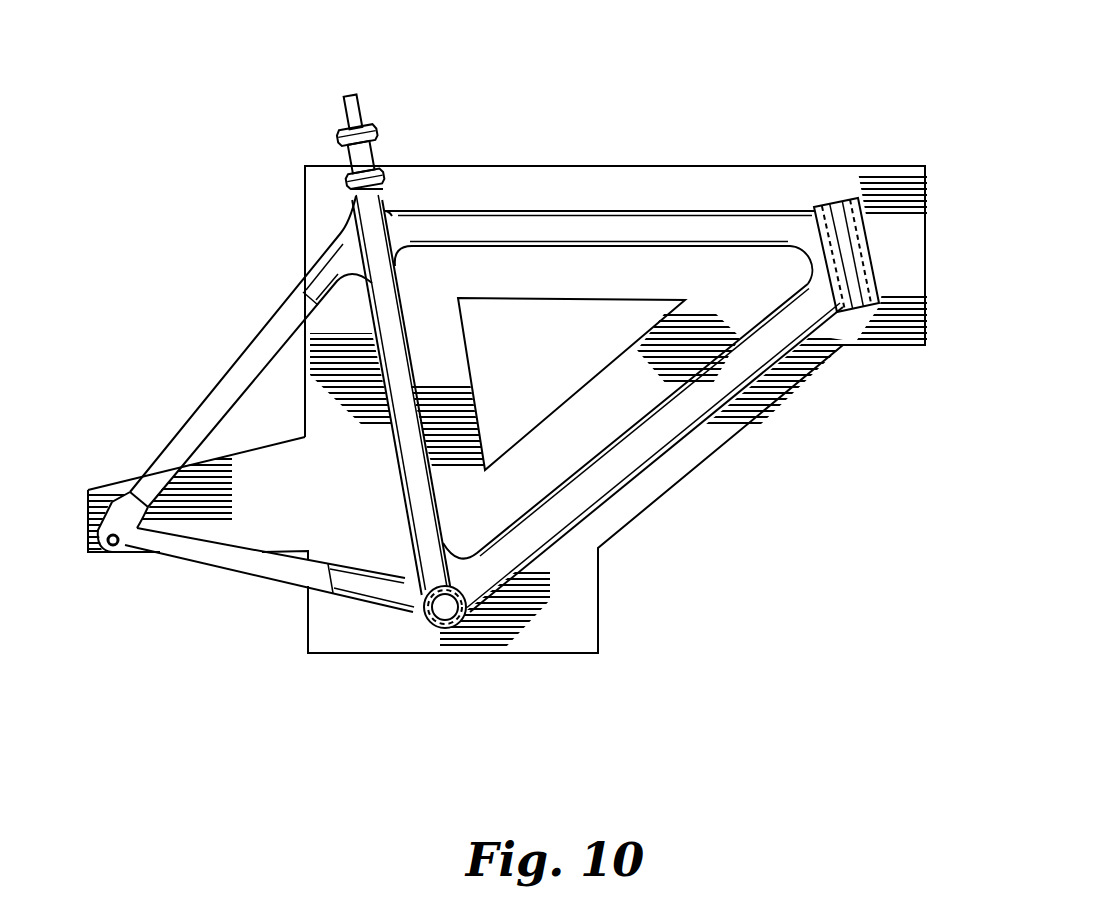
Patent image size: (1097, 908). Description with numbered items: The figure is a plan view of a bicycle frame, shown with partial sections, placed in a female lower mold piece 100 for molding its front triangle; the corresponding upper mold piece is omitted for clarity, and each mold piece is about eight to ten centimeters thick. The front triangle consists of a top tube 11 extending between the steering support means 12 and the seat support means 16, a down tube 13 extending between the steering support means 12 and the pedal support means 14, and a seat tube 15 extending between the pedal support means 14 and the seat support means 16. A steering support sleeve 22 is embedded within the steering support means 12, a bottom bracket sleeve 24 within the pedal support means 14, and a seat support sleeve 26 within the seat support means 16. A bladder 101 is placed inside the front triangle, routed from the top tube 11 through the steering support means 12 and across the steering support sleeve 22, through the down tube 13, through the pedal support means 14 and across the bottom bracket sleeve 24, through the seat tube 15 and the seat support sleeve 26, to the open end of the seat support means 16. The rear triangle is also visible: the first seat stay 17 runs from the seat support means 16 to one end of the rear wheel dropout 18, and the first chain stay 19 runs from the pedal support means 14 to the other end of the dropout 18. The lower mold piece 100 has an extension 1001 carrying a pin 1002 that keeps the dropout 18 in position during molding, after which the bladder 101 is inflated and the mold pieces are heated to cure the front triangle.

The lower mold piece 100 is at (640, 150).
The bladder 101 is at (610, 473).
The extension 1001 is at (200, 443).
The pin 1002 is at (112, 553).
The top tube 11 is at (500, 211).
The steering support means 12 is at (860, 205).
The down tube 13 is at (687, 437).
The pedal support means 14 is at (420, 633).
The seat tube 15 is at (413, 365).
The seat support means 16 is at (392, 207).
The first seat stay 17 is at (232, 378).
The rear wheel dropout 18 is at (118, 522).
The first chain stay 19 is at (256, 577).
The steering support sleeve 22 is at (830, 225).
The bottom bracket sleeve 24 is at (462, 632).
The seat support sleeve 26 is at (352, 195).